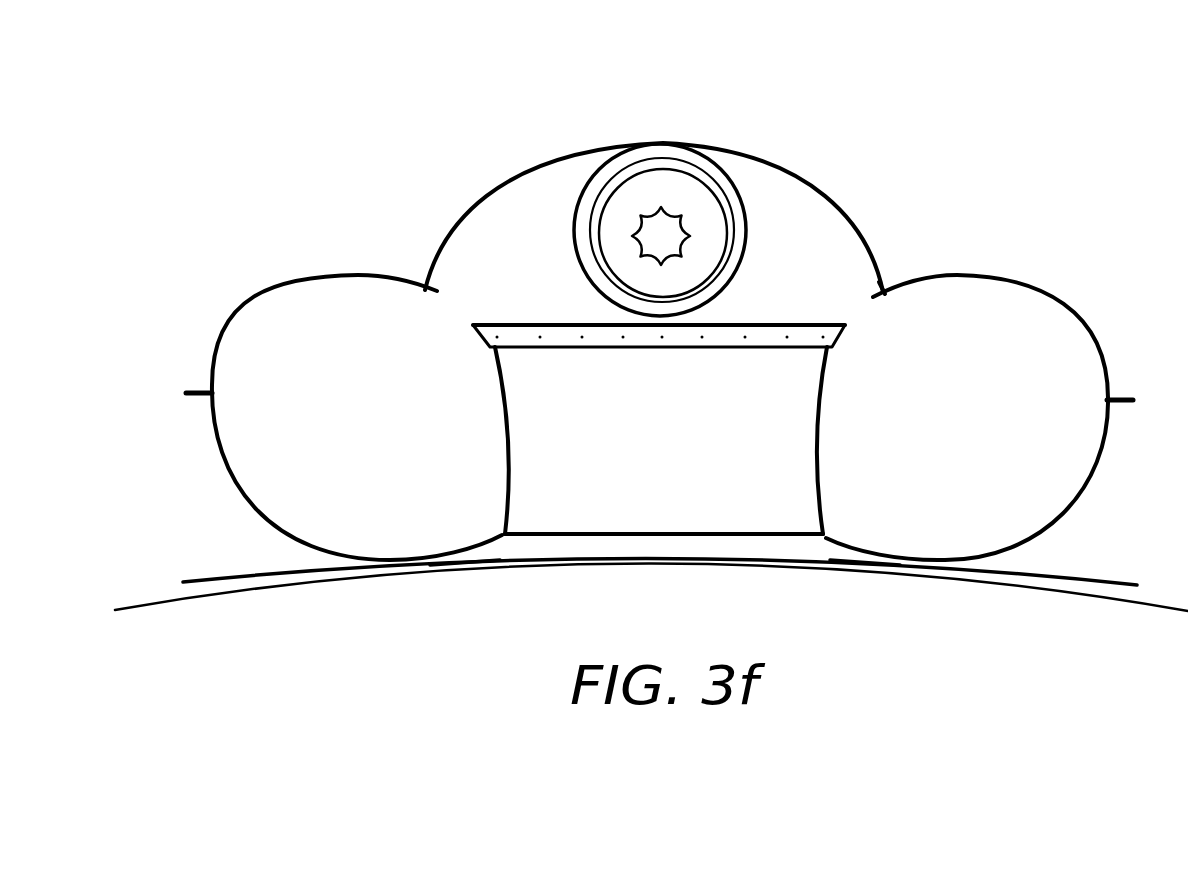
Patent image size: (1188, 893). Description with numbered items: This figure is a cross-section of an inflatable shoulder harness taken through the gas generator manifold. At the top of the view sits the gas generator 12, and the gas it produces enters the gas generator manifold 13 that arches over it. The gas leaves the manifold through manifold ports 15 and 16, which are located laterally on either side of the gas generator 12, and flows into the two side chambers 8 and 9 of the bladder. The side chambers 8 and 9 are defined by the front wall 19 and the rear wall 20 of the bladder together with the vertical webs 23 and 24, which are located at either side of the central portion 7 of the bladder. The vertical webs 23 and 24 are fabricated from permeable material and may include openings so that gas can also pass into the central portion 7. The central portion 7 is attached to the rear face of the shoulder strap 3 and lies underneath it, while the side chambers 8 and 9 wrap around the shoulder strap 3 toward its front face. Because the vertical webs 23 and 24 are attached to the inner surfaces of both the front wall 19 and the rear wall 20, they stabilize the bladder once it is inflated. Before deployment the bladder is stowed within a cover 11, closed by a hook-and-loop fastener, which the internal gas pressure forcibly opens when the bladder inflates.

The shoulder strap 3 is at (466, 317).
The central portion 7 is at (557, 515).
The side chamber 8 is at (1065, 338).
The side chamber 9 is at (243, 338).
The cover 11 is at (1102, 580).
The gas generator 12 is at (612, 134).
The gas generator manifold 13 is at (750, 182).
The manifold port 15 is at (855, 292).
The manifold port 16 is at (452, 310).
The front wall 19 is at (287, 285).
The rear wall 20 is at (468, 570).
The vertical web 23 is at (820, 463).
The vertical web 24 is at (507, 457).